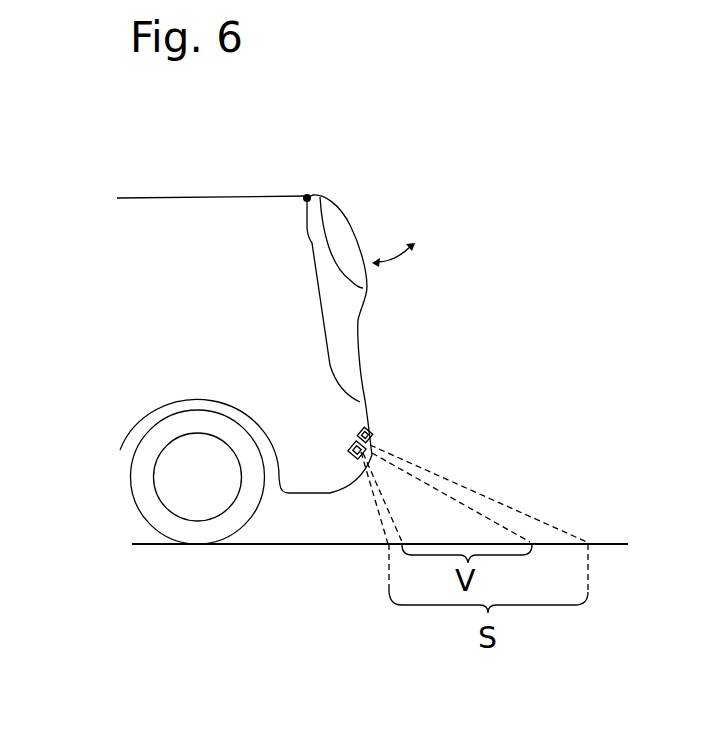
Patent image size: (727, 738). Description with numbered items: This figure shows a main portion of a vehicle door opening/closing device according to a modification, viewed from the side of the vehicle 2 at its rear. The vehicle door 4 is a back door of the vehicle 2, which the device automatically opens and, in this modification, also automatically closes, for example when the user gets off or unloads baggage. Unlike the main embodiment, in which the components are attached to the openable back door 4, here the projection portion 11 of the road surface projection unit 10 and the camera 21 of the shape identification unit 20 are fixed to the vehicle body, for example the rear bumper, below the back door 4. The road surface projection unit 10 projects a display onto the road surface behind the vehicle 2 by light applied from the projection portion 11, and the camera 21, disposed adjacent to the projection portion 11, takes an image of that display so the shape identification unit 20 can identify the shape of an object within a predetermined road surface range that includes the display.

The vehicle 2 is at (235, 228).
The vehicle door 4 is at (332, 230).
The shape identification unit 20 is at (426, 390).
The camera 21 is at (368, 430).
The road surface projection unit 10 is at (467, 484).
The projection portion 11 is at (373, 452).